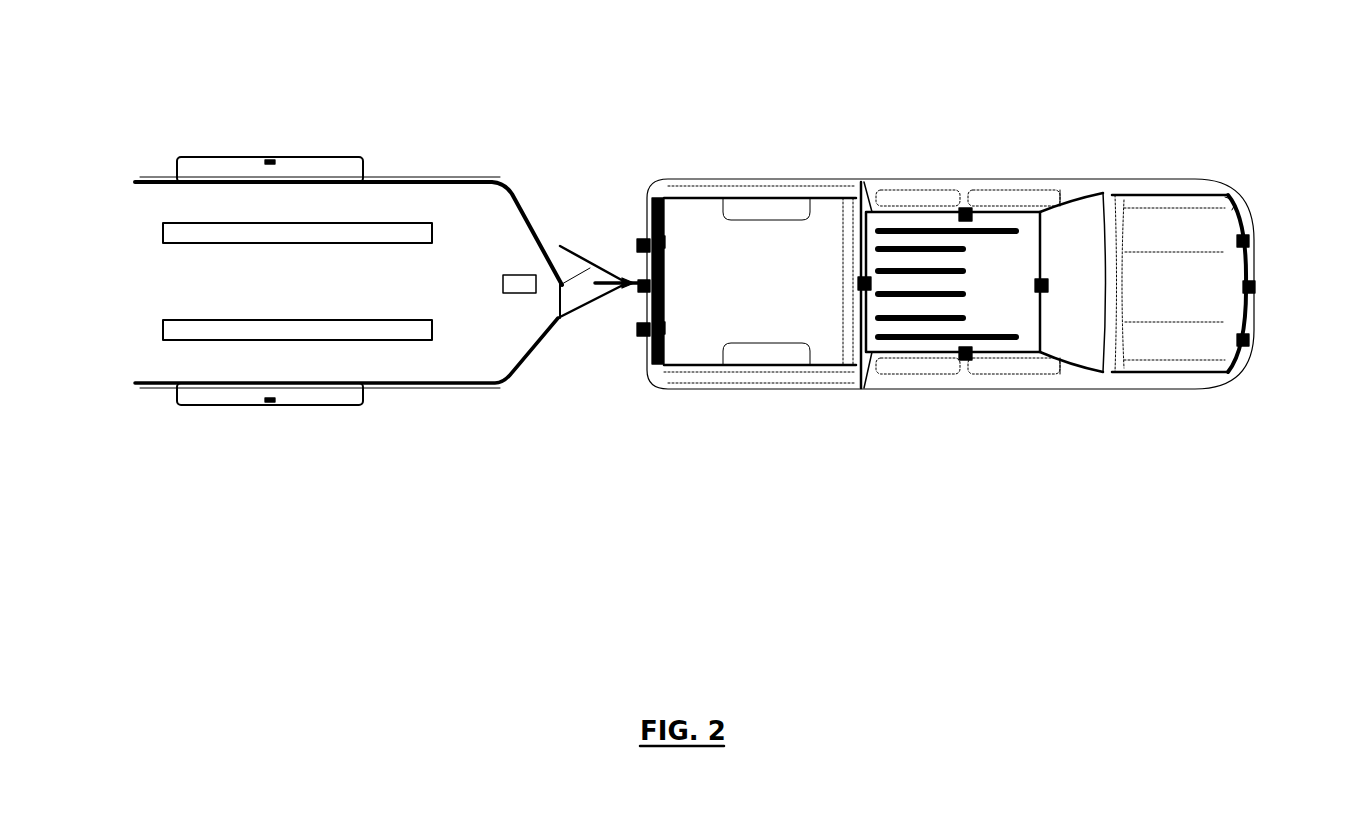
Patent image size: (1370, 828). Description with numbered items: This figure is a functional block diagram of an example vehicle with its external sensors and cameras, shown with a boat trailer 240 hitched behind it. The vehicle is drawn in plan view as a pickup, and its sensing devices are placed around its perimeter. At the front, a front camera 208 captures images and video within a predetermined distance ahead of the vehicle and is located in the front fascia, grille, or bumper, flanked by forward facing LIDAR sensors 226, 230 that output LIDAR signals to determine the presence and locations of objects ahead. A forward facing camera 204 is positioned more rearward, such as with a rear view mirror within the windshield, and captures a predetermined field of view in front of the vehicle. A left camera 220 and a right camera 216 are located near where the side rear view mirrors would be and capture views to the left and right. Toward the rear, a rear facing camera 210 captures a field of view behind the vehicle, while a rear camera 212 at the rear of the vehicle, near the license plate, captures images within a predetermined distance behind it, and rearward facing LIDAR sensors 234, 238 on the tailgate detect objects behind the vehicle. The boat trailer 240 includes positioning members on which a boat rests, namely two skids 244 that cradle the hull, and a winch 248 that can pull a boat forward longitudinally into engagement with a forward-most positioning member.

The boat trailer 240 is at (626, 130).
The skids 244 is at (396, 225).
The winch 248 is at (522, 275).
The rear camera 212 is at (637, 294).
The rearward facing LIDAR sensor 234 is at (664, 242).
The rearward facing LIDAR sensor 238 is at (665, 328).
The rear facing camera 210 is at (863, 291).
The left camera 220 is at (964, 208).
The right camera 216 is at (966, 361).
The forward facing camera 204 is at (1045, 293).
The forward facing LIDAR sensor 226 is at (1249, 240).
The front camera 208 is at (1255, 290).
The forward facing LIDAR sensor 230 is at (1245, 348).